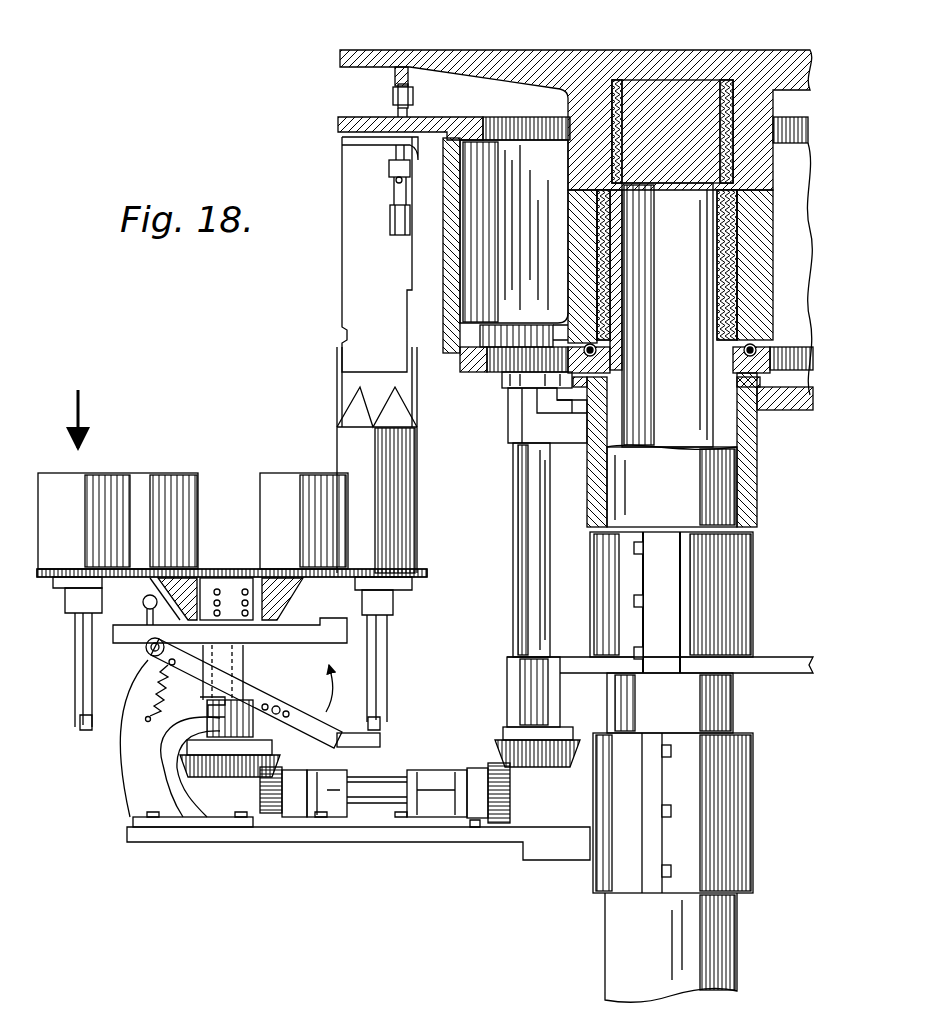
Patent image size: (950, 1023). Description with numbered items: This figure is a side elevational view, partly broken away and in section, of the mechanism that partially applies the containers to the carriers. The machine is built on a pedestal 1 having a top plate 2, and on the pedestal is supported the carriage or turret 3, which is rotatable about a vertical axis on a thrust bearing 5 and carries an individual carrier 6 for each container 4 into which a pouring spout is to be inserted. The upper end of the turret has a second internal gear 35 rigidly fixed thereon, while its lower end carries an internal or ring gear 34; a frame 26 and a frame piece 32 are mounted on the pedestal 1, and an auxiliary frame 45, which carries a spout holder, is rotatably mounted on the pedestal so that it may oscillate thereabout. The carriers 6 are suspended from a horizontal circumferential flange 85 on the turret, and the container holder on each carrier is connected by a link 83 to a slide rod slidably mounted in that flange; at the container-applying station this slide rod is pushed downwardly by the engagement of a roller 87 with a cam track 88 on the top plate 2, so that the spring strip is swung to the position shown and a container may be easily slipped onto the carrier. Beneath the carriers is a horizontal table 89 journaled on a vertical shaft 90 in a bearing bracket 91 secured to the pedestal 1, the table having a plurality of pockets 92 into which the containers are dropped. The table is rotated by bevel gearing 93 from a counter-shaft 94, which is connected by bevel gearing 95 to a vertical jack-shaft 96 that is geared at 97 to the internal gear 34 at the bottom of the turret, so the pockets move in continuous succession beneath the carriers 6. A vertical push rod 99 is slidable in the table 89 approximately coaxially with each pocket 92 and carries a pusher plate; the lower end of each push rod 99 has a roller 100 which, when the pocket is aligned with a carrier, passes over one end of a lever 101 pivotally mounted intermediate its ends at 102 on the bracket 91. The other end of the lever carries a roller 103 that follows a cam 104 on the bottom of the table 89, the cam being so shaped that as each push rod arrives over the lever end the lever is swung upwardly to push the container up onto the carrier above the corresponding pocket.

The pedestal 1 is at (718, 915).
The top plate 2 is at (432, 60).
The carriage or turret 3 is at (442, 213).
The container 4 is at (408, 456).
The thrust bearing 5 is at (745, 348).
The individual carrier 6 is at (339, 248).
The frame 26 is at (800, 670).
The frame piece 32 is at (757, 476).
The internal or ring gear 34 is at (466, 372).
The second internal gear 35 is at (512, 128).
The auxiliary frame 45 is at (757, 398).
The link 83 is at (394, 228).
The horizontal circumferential flange 85 is at (338, 123).
The roller 87 is at (414, 95).
The cam track 88 is at (394, 75).
The horizontal table 89 is at (420, 580).
The vertical shaft 90 is at (244, 665).
The bearing bracket 91 is at (130, 771).
The pocket 92 is at (162, 472).
The bevel gearing 93 is at (252, 764).
The counter-shaft 94 is at (405, 795).
The bevel gearing 95 is at (514, 775).
The vertical jack-shaft 96 is at (515, 615).
The gearing 97 is at (512, 380).
The vertical push rod 99 is at (75, 666).
The roller 100 is at (80, 730).
The lever 101 is at (381, 742).
The pivot 102 is at (150, 655).
The roller 103 is at (143, 604).
The cam 104 is at (165, 597).